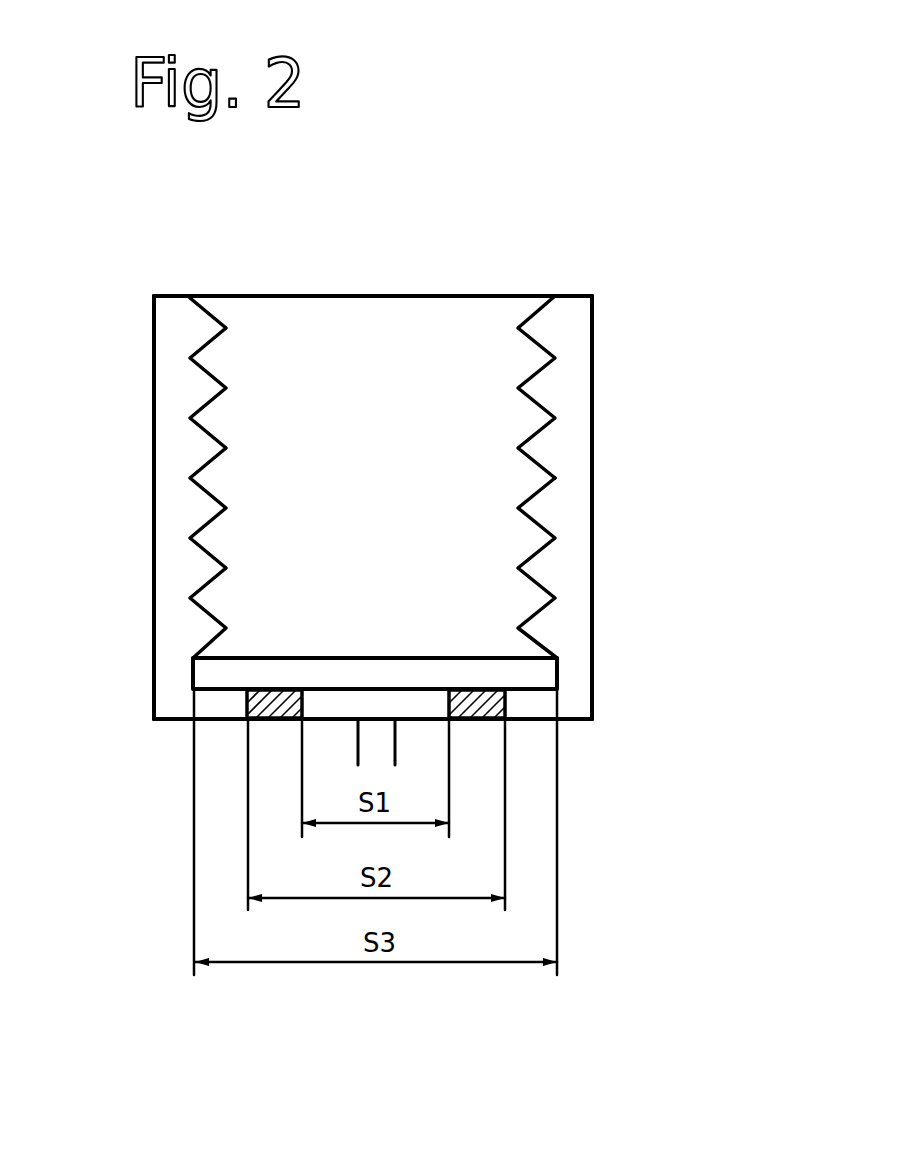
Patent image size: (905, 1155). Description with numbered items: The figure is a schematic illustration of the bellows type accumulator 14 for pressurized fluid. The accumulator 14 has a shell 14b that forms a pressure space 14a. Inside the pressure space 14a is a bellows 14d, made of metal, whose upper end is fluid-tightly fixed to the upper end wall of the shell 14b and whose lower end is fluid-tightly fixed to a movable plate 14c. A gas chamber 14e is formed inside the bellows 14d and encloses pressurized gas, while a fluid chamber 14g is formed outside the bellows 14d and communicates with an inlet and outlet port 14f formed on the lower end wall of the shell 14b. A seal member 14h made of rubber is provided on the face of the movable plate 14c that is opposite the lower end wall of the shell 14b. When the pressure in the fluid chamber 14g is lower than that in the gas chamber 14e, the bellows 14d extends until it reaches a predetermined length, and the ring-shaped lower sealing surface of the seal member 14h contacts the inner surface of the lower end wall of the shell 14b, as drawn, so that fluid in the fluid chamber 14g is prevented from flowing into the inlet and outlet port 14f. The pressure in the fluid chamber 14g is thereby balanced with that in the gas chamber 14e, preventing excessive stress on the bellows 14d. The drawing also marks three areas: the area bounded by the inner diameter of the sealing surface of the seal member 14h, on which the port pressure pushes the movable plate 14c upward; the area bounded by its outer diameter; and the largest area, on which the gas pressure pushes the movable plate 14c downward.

The bellows type accumulator 14 is at (615, 365).
The pressure space 14a is at (562, 337).
The shell 14b is at (592, 441).
The movable plate 14c is at (203, 673).
The bellows 14d is at (547, 550).
The gas chamber 14e is at (357, 303).
The inlet and outlet port 14f is at (368, 745).
The fluid chamber 14g is at (178, 525).
The seal member 14h is at (487, 705).